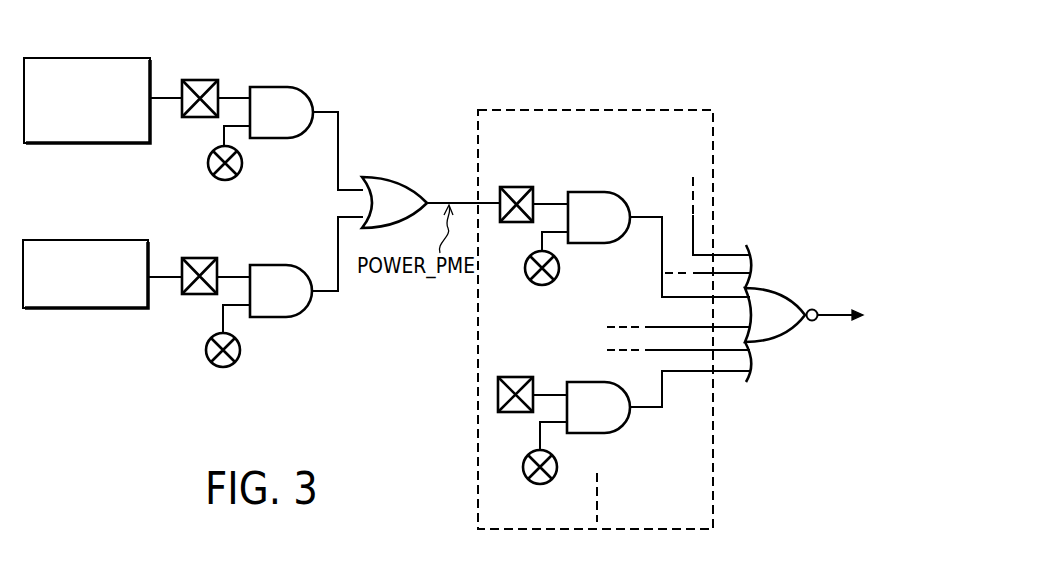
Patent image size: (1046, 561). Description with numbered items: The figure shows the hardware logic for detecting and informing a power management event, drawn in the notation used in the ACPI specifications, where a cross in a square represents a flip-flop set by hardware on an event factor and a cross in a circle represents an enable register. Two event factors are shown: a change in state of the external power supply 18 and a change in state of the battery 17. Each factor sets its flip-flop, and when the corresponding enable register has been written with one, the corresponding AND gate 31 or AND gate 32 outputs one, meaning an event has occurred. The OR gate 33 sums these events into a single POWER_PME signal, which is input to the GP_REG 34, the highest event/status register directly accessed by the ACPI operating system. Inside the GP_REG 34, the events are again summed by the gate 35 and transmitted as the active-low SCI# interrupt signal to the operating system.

The battery 17 is at (133, 252).
The external power supply 18 is at (137, 70).
The AND gate 31 is at (285, 92).
The AND gate 32 is at (285, 272).
The OR gate 33 is at (398, 178).
The GP_REG 34 is at (605, 109).
The OR gate 35 is at (763, 295).